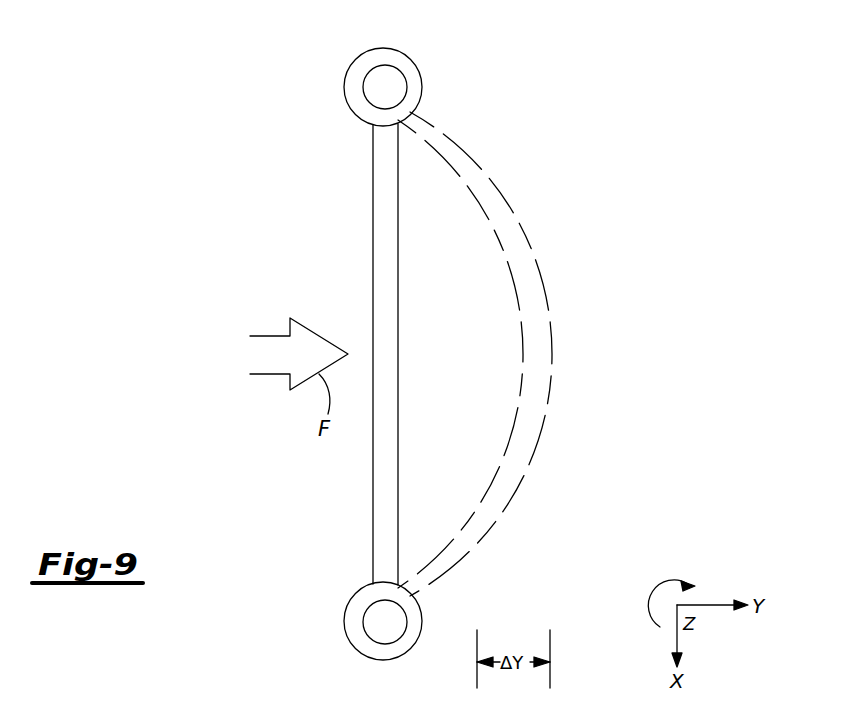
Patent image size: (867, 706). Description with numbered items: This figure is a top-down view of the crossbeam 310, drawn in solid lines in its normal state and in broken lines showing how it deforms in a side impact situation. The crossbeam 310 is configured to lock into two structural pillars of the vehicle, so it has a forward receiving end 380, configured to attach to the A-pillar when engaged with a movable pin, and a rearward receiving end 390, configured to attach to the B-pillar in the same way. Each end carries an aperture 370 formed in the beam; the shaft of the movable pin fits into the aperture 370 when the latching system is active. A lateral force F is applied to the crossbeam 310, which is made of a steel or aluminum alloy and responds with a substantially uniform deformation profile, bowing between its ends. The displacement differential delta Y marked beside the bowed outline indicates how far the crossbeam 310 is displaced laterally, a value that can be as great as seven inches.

The crossbeam 310 is at (373, 272).
The aperture 370 is at (407, 83).
The forward receiving end 380 is at (328, 90).
The rearward receiving end 390 is at (328, 622).